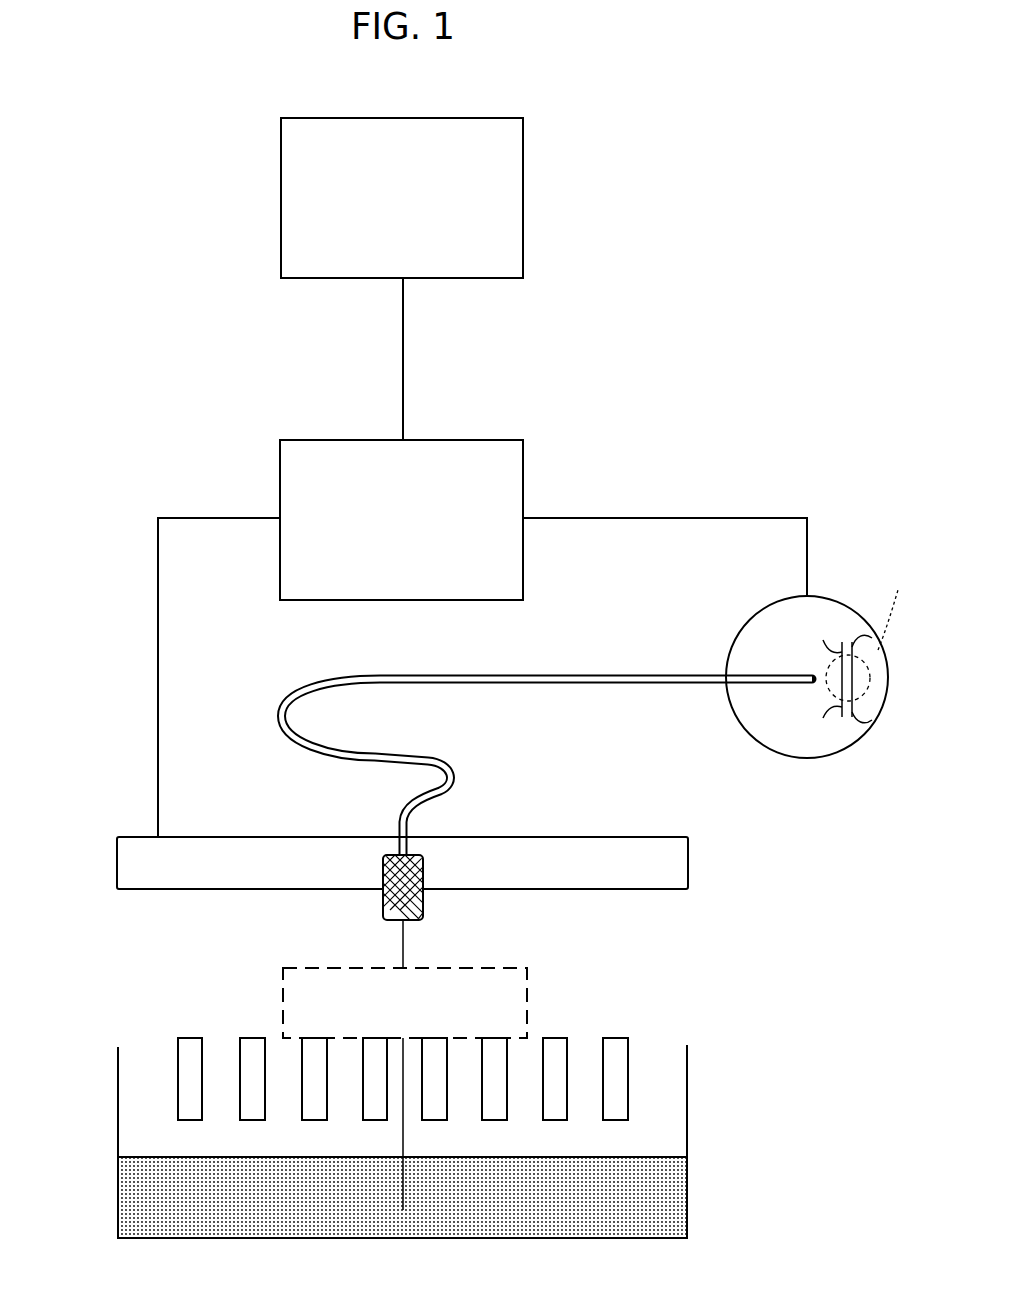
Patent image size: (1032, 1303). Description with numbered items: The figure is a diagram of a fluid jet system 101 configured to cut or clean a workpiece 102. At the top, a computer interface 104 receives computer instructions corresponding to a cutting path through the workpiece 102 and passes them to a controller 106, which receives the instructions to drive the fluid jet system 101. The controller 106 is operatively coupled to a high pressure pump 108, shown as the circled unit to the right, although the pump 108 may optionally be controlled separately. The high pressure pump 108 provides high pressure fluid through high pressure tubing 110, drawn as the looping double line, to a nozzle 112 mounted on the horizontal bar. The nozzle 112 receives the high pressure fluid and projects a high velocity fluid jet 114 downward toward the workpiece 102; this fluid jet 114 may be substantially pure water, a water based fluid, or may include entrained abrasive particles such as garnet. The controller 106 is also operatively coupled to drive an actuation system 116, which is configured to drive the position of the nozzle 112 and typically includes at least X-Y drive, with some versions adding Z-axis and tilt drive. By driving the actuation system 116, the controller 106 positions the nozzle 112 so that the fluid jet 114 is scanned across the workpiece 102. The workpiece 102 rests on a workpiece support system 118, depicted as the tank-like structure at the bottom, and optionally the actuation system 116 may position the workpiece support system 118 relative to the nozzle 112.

The fluid jet system 101 is at (743, 119).
The workpiece 102 is at (383, 1033).
The computer interface 104 is at (383, 230).
The controller 106 is at (381, 551).
The high pressure pump 108 is at (807, 758).
The high pressure tubing 110 is at (440, 776).
The nozzle 112 is at (382, 918).
The high velocity fluid jet 114 is at (405, 1133).
The actuation system 116 is at (115, 864).
The workpiece support system 118 is at (689, 1106).